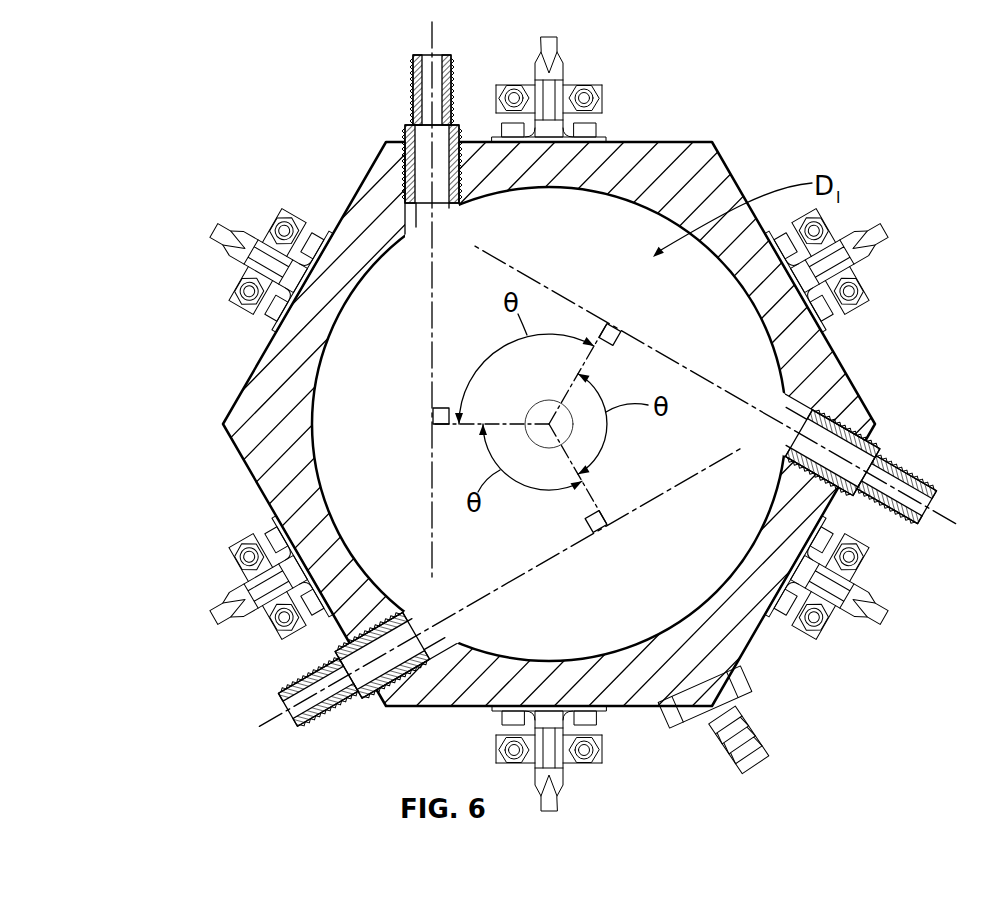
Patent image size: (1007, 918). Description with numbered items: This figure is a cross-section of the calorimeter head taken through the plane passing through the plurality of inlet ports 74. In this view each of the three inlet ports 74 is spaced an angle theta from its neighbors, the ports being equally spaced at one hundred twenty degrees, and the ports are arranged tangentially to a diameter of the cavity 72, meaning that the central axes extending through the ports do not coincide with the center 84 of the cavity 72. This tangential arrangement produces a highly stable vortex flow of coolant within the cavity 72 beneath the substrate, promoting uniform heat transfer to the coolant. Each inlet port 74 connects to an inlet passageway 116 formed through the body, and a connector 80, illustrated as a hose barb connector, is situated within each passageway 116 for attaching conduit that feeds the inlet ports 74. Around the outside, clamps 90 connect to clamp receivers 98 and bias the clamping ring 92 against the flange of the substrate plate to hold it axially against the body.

The cavity 72 is at (717, 187).
The inlet port 74 is at (458, 210).
The connector 80 is at (413, 72).
The central axis of chamber 84 is at (549, 400).
The clamp 90 is at (560, 70).
The clamping ring 92 is at (690, 140).
The clamp receiver 98 is at (600, 135).
The inlet passageway 116 is at (405, 150).